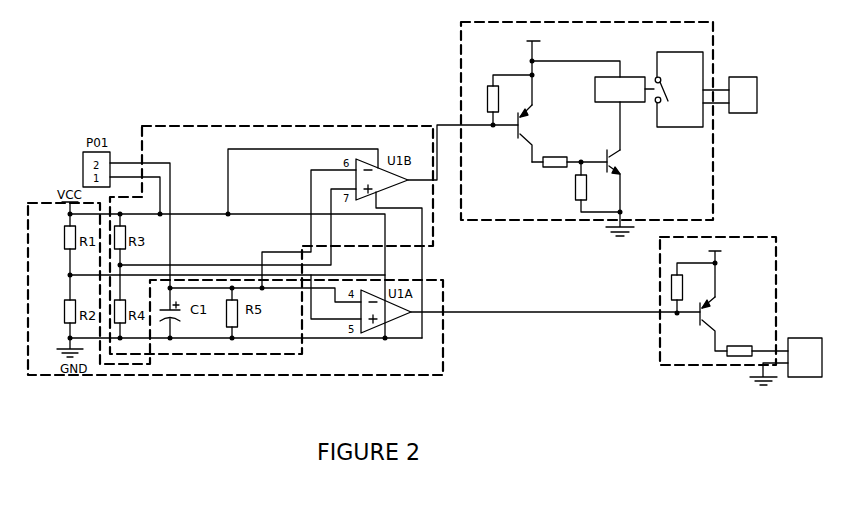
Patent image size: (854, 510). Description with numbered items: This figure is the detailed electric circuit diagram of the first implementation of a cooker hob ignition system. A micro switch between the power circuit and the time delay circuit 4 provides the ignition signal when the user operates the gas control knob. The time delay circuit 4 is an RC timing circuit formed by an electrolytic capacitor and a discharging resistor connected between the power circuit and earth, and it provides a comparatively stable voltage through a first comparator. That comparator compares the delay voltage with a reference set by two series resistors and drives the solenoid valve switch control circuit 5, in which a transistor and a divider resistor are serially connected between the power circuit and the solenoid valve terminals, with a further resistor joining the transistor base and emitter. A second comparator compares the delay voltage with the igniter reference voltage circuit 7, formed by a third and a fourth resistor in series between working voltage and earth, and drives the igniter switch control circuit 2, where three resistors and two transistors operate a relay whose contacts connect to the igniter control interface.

The igniter switch control circuit 2 is at (713, 38).
The time delay circuit 4 is at (443, 347).
The solenoid valve switch control circuit 5 is at (776, 276).
The igniter reference voltage circuit 7 is at (325, 124).